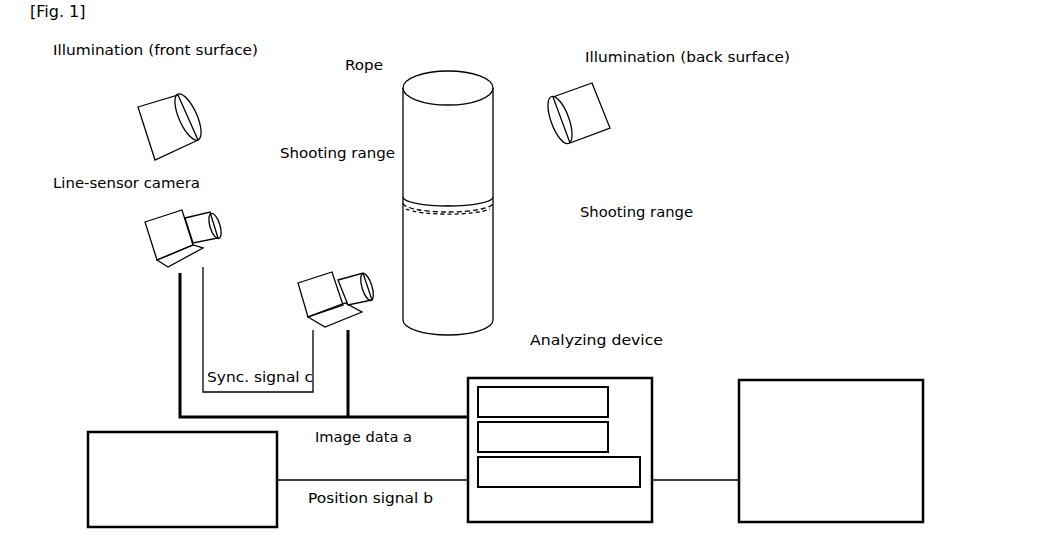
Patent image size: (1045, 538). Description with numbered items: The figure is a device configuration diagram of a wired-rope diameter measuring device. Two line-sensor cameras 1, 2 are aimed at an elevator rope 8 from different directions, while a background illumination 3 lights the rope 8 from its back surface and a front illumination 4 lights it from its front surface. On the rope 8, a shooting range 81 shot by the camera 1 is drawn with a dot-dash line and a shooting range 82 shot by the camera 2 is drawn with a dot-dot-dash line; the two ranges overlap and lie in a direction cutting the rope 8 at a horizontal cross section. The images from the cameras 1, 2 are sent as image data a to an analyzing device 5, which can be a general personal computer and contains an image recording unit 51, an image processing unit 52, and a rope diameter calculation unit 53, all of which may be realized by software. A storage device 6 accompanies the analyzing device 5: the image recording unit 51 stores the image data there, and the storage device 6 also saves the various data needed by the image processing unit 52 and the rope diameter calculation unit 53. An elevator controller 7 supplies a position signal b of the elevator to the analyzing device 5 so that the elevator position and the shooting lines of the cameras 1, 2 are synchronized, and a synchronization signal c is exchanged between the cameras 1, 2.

The line-sensor camera 1 is at (157, 238).
The line-sensor camera 2 is at (313, 288).
The background illumination 3 is at (575, 100).
The front illumination 4 is at (147, 132).
The analyzing device 5 is at (587, 423).
The image recording unit 51 is at (612, 398).
The image processing unit 52 is at (612, 432).
The rope diameter calculation unit 53 is at (640, 455).
The storage device 6 is at (884, 380).
The elevator controller 7 is at (110, 432).
The elevator rope 8 is at (415, 128).
The shooting range 81 is at (401, 197).
The shooting range 82 is at (496, 197).